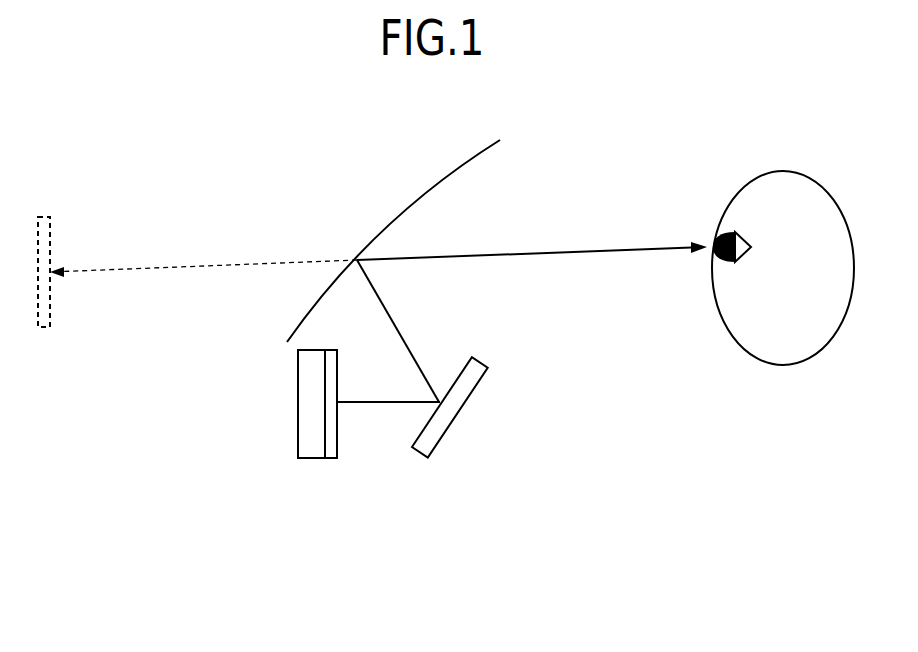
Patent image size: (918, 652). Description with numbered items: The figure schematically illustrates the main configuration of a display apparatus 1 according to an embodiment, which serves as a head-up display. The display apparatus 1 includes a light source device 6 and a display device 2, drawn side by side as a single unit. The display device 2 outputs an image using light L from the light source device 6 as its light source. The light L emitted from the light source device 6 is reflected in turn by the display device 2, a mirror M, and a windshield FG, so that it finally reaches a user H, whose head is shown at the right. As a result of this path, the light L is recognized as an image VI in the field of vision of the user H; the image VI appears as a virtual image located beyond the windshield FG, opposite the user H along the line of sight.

The display apparatus 1 is at (315, 463).
The display device 2 is at (330, 458).
The light source device 6 is at (313, 458).
The mirror M is at (428, 458).
The windshield FG is at (427, 190).
The light L is at (560, 253).
The image VI is at (42, 216).
The user H is at (783, 380).